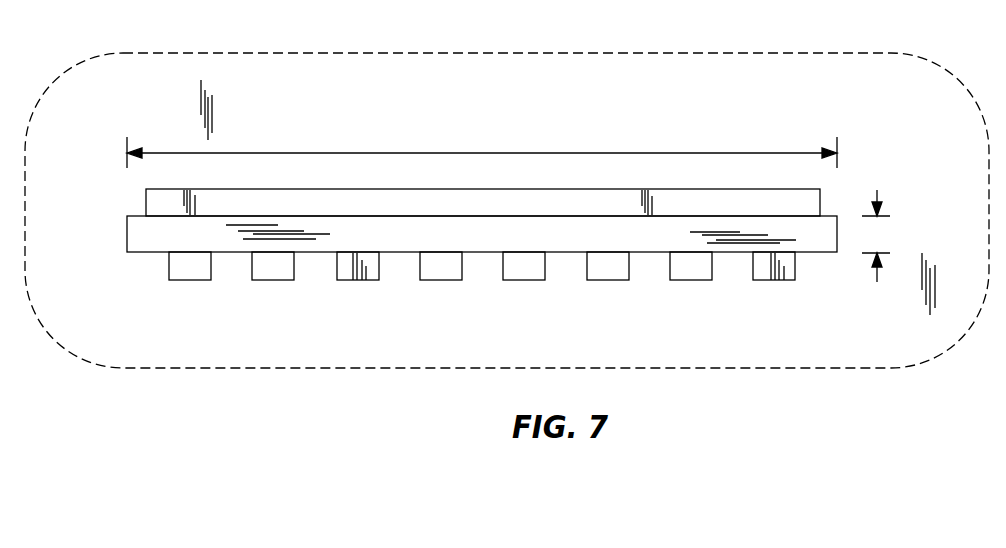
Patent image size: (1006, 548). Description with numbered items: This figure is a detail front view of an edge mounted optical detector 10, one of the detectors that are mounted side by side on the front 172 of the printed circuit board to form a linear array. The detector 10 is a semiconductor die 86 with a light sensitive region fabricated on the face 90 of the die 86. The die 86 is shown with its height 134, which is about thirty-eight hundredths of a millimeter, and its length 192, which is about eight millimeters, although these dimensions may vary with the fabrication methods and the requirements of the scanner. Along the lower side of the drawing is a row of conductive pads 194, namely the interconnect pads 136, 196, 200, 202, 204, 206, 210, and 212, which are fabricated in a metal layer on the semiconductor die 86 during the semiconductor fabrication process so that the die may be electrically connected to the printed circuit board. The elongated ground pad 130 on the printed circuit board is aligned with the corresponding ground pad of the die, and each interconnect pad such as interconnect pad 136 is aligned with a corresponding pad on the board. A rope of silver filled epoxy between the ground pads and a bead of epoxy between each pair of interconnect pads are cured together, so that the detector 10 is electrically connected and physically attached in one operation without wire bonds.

The edge mounted optical detector 10 is at (850, 178).
The semiconductor die 86 is at (127, 233).
The face 90 is at (815, 262).
The ground pad 130 is at (155, 209).
The height 134 is at (882, 193).
The interconnect pad 136 is at (190, 280).
The front 172 is at (669, 113).
The length 192 is at (471, 153).
The row of contact pads 194 is at (166, 268).
The interconnect pad 196 is at (273, 280).
The interconnect pad 200 is at (358, 280).
The interconnect pad 202 is at (441, 280).
The interconnect pad 204 is at (524, 280).
The interconnect pad 206 is at (608, 280).
The interconnect pad 210 is at (691, 280).
The interconnect pad 212 is at (774, 280).